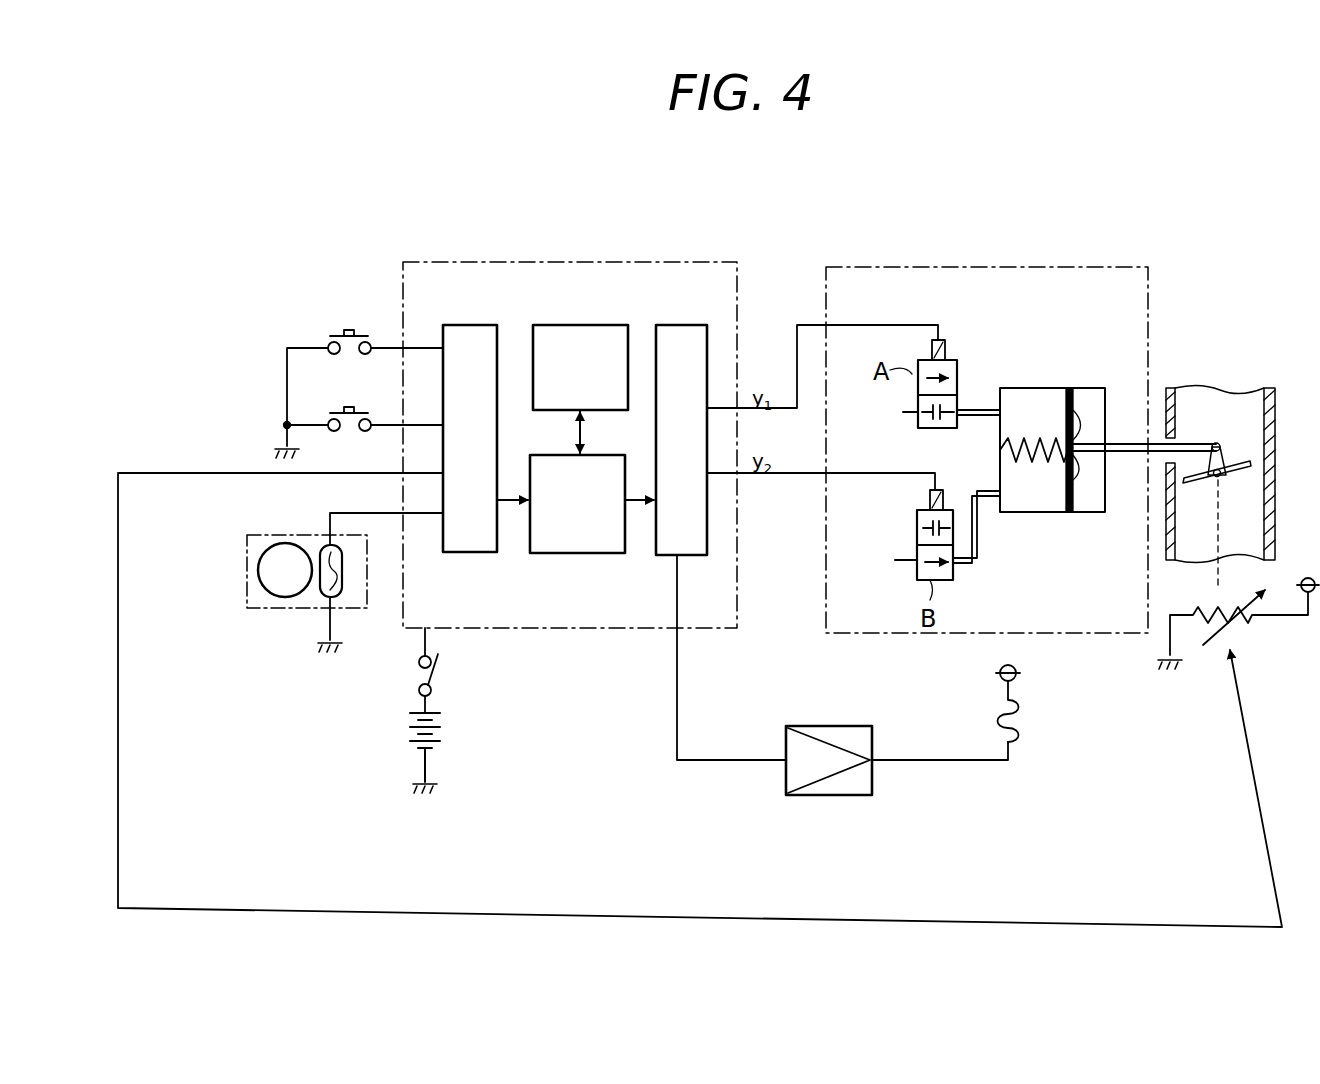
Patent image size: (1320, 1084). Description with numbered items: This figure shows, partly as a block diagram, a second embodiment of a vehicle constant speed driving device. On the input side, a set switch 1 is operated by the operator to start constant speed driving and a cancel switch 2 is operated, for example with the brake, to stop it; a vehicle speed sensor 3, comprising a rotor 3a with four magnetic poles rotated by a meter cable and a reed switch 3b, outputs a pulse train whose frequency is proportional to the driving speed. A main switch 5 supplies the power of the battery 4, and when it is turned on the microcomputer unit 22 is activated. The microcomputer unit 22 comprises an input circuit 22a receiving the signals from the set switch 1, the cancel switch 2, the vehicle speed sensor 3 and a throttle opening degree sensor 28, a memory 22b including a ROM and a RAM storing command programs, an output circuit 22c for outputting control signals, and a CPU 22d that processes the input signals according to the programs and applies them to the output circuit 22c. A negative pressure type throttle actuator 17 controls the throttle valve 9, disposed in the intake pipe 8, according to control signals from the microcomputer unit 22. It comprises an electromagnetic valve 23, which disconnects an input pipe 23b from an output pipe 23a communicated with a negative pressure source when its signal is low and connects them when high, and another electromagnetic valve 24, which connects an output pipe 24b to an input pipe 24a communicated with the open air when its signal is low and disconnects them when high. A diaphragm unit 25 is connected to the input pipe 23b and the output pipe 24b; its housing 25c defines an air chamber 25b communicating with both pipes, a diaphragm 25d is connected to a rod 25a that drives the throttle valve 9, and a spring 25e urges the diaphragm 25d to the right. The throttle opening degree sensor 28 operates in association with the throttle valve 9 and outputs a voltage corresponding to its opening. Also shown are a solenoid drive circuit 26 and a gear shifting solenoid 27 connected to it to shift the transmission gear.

The set switch 1 is at (360, 326).
The cancel switch 2 is at (360, 404).
The vehicle speed sensor 3 is at (328, 580).
The rotor 3a is at (268, 590).
The reed switch 3b is at (322, 590).
The battery 4 is at (445, 737).
The main switch 5 is at (440, 680).
The intake pipe 8 is at (1240, 402).
The throttle valve 9 is at (1248, 472).
The negative pressure type throttle actuator 17 is at (1108, 268).
The microcomputer unit 22 is at (704, 258).
The input circuit 22a is at (472, 330).
The memory 22b is at (605, 330).
The output circuit 22c is at (685, 330).
The CPU 22d is at (560, 555).
The electromagnetic valve 23 is at (929, 383).
The output pipe 23a is at (908, 418).
The input pipe 23b is at (975, 418).
The electromagnetic valve 24 is at (940, 555).
The input pipe 24a is at (898, 540).
The output pipe 24b is at (965, 570).
The diaphragm unit 25 is at (1108, 443).
The rod 25a is at (1120, 440).
The air chamber 25b is at (1018, 435).
The housing 25c is at (1050, 512).
The diaphragm 25d is at (1090, 512).
The spring 25e is at (1020, 470).
The solenoid drive circuit 26 is at (851, 727).
The gear shifting solenoid 27 is at (1022, 722).
The throttle opening degree sensor 28 is at (1245, 640).